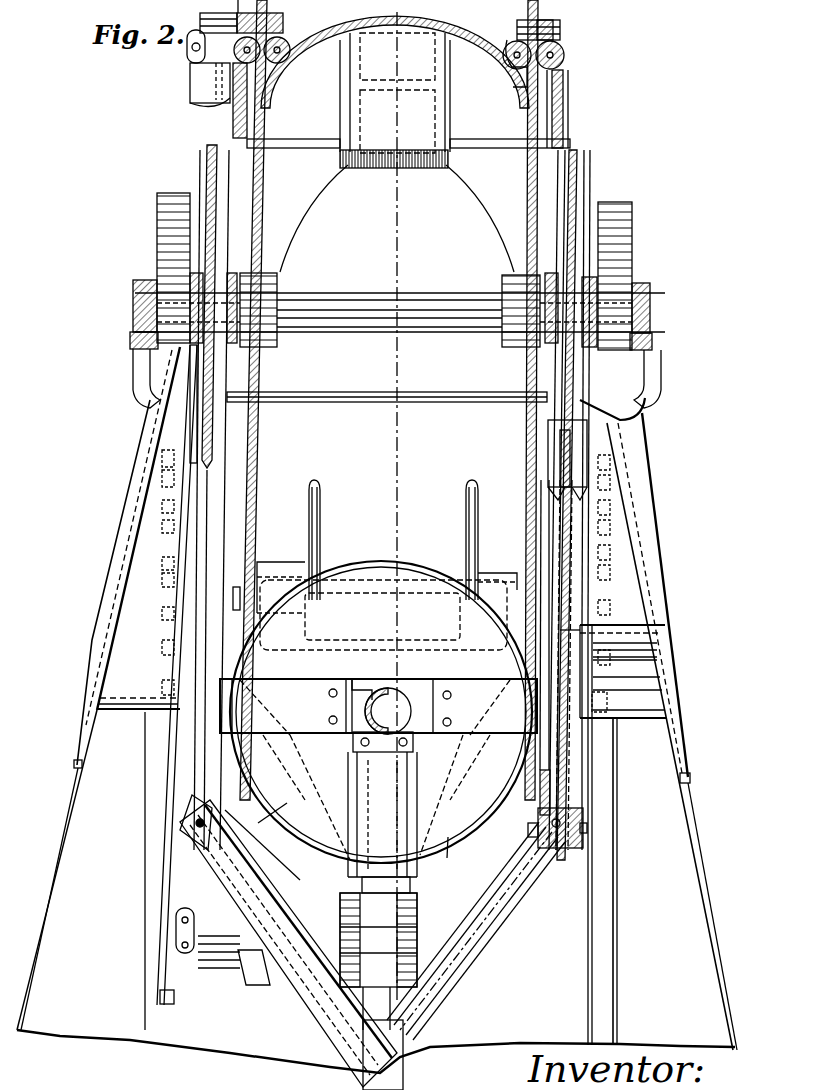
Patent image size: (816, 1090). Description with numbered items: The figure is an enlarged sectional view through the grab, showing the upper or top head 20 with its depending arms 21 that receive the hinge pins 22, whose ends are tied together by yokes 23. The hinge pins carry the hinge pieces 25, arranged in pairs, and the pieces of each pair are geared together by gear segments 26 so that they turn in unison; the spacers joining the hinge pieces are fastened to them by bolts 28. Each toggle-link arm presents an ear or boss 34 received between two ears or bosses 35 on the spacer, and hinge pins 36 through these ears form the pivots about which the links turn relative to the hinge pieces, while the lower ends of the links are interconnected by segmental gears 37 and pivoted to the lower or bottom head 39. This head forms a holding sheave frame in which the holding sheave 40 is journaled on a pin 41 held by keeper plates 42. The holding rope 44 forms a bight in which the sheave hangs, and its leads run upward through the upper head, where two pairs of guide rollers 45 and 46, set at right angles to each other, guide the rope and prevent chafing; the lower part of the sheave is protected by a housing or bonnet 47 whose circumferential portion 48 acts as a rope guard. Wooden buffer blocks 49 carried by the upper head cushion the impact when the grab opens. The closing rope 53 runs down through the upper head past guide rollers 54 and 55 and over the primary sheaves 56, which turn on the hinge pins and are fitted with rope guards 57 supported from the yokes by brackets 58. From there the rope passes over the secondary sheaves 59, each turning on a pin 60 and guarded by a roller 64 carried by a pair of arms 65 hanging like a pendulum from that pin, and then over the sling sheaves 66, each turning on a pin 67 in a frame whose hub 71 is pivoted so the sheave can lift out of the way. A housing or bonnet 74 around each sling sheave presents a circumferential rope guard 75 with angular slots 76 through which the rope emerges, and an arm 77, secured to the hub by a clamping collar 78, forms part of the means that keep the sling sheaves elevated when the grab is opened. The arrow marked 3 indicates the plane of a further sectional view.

The section line 3 is at (397, 13).
The upper or top head 20 is at (456, 44).
The depending arms 21 is at (292, 250).
The hinge pins 22 is at (132, 315).
The yokes 23 is at (135, 341).
The hinge pieces 25 is at (118, 519).
The gear segments 26 is at (157, 221).
The bolts 28 is at (160, 458).
The ear or boss 34 is at (272, 572).
The ears or bosses 35 is at (312, 560).
The hinge pins 36 is at (320, 608).
The segmental gears 37 is at (392, 965).
The lower or bottom head 39 is at (400, 798).
The holding sheave 40 is at (405, 578).
The pin 41 is at (405, 707).
The keeper plates 42 is at (415, 750).
The holding rope 44 is at (258, 421).
The guide rollers 45 is at (285, 41).
The guide rollers 46 is at (272, 22).
The housing or bonnet 47 is at (458, 866).
The circumferential portion 48 is at (290, 868).
The wooden buffer blocks 49 is at (371, 168).
The closing rope 53 is at (207, 170).
The guide rollers 54 is at (233, 6).
The guide rollers 55 is at (187, 47).
The primary sheaves 56 is at (590, 162).
The rope guards 57 is at (548, 440).
The brackets 58 is at (135, 371).
The secondary sheaves 59 is at (570, 770).
The pin 60 is at (665, 627).
The roller 64 is at (562, 850).
The arms 65 is at (540, 800).
The sling sheaves 66 is at (212, 838).
The pin 67 is at (255, 977).
The hub 71 is at (221, 957).
The housing or bonnet 74 is at (285, 896).
The circumferential rope guard 75 is at (267, 885).
The angular slots 76 is at (205, 862).
The arm 77 is at (174, 996).
The clamping collar 78 is at (188, 926).